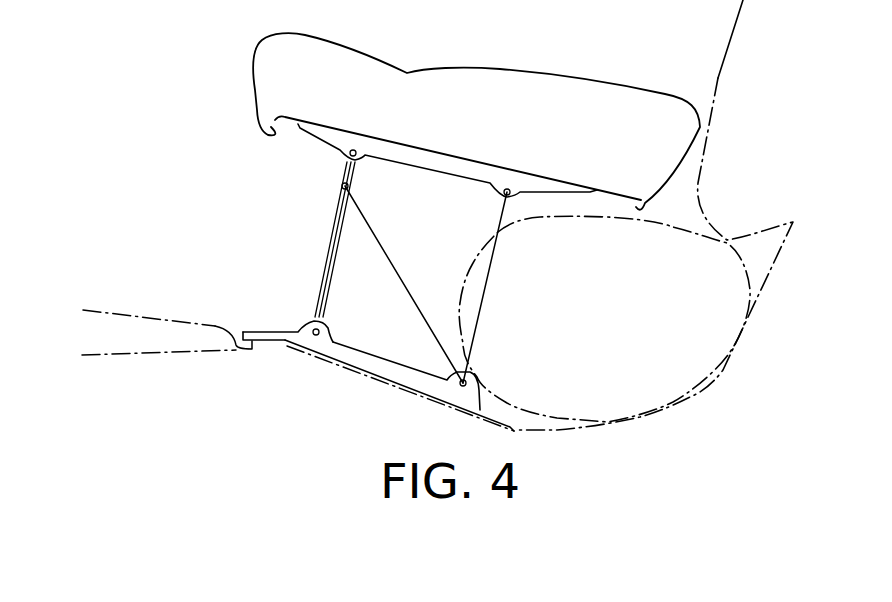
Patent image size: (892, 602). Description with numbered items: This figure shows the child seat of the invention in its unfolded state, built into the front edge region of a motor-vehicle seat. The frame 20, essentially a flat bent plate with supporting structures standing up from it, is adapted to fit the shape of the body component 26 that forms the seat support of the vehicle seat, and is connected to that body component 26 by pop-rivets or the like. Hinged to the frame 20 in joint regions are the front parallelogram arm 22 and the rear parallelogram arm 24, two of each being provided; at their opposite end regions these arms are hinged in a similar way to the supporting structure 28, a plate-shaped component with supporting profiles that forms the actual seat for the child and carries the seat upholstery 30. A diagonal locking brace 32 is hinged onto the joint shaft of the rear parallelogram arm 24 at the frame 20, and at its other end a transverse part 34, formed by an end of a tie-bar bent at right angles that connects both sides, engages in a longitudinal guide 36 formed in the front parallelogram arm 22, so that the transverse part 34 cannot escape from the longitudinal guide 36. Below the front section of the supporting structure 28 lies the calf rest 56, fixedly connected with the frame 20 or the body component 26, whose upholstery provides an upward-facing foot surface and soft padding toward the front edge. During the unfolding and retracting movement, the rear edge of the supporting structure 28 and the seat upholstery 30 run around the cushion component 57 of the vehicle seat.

The frame 20 is at (410, 375).
The front parallelogram arm 22 is at (317, 313).
The rear parallelogram arm 24 is at (482, 302).
The body component 26 is at (357, 374).
The supporting structure 28 is at (420, 153).
The seat upholstery 30 is at (583, 97).
The diagonal locking brace 32 is at (407, 289).
The transverse part 34 is at (341, 185).
The longitudinal guide 36 is at (331, 228).
The calf rest 56 is at (107, 338).
The cushion component 57 is at (707, 307).